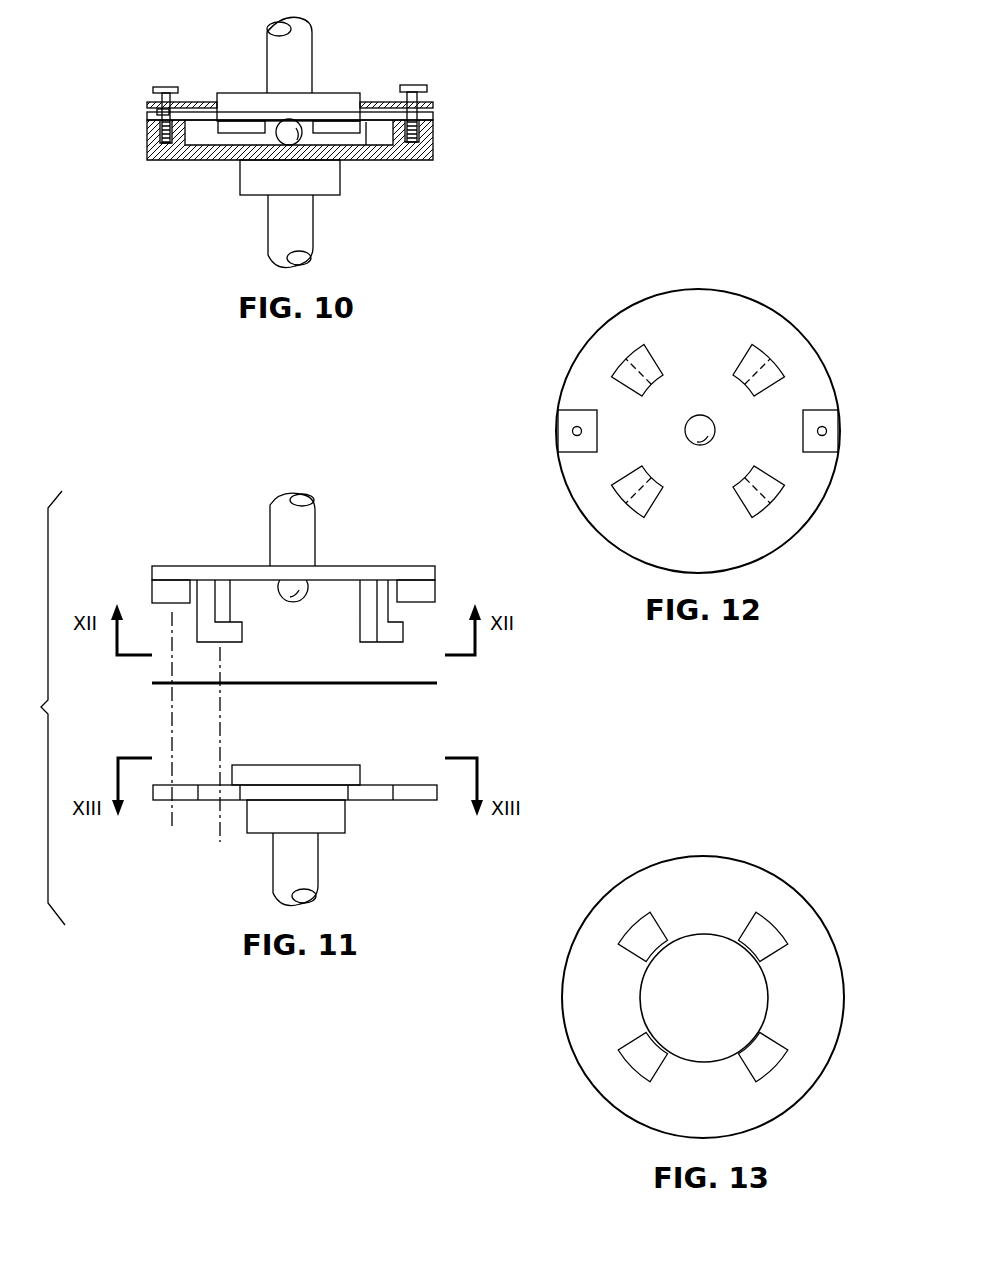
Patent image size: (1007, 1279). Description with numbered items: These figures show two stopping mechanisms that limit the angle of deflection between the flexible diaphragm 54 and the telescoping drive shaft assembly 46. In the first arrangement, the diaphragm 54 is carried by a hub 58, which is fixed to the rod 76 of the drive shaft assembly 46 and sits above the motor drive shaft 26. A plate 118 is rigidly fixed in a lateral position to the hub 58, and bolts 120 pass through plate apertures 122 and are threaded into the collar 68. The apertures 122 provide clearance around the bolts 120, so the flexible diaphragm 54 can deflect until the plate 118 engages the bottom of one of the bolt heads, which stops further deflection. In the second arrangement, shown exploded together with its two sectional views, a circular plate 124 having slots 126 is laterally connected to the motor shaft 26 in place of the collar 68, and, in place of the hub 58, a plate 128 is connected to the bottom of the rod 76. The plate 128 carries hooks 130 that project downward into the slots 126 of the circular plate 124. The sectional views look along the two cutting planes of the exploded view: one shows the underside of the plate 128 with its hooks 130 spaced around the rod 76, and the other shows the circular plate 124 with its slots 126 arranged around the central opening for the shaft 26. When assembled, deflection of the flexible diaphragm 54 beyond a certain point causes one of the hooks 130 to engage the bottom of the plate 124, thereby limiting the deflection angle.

In FIG. 10, the drive shaft 26 is at (268, 241).
In FIG. 11, the drive shaft assembly 46 is at (273, 877).
In FIG. 10, the flexible diaphragm 54 is at (372, 125).
In FIG. 11, the flexible diaphragm 54 is at (393, 684).
In FIG. 10, the hub 58 is at (342, 93).
In FIG. 10, the collar 68 is at (433, 134).
In FIG. 10, the rod 76 is at (267, 26).
In FIG. 11, the rod 76 is at (316, 514).
In FIG. 10, the plate 118 is at (376, 101).
In FIG. 10, the bolts 120 is at (165, 87).
In FIG. 10, the plate apertures 122 is at (156, 112).
In FIG. 11, the circular plate 124 is at (407, 800).
In FIG. 13, the circular plate 124 is at (808, 902).
In FIG. 13, the slots 126 is at (638, 1072).
In FIG. 11, the plate 128 is at (152, 576).
In FIG. 12, the plate 128 is at (788, 315).
In FIG. 11, the hooks 130 is at (360, 633).
In FIG. 12, the hooks 130 is at (630, 353).